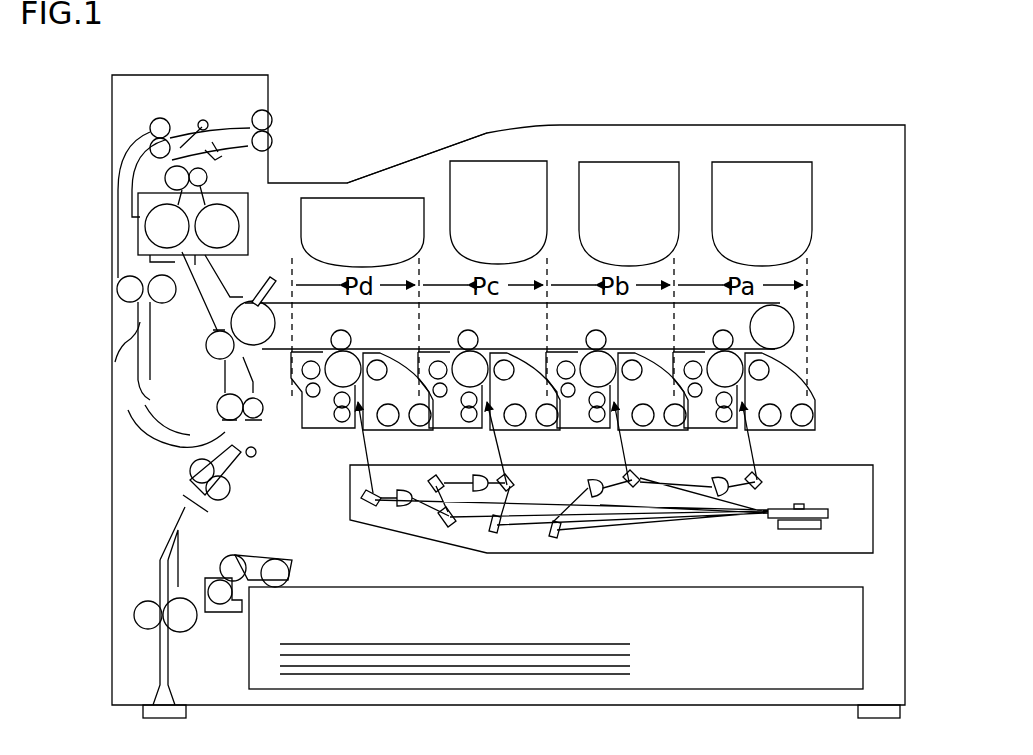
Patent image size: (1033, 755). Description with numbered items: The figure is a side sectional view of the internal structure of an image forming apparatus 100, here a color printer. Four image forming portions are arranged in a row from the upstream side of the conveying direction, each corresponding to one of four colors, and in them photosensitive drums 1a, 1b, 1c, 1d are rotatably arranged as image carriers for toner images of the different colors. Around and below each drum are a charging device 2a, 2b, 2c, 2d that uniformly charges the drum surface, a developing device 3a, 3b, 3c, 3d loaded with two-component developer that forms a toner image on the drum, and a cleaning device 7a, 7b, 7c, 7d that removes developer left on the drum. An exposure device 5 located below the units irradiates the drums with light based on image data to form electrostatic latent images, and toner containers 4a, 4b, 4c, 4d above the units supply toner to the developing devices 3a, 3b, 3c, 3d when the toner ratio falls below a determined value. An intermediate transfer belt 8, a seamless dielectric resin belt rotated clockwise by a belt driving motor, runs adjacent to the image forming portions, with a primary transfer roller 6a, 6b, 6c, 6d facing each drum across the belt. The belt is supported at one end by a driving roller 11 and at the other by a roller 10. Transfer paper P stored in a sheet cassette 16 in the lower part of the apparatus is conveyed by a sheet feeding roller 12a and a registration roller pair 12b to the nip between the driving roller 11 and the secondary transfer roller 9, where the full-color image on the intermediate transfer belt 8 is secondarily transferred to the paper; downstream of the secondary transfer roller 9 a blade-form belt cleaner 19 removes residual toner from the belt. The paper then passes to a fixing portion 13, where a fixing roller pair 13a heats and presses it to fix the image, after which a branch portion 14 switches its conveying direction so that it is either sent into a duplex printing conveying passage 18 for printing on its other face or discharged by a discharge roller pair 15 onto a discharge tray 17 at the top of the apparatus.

The image forming apparatus 100 is at (735, 91).
The photosensitive drum 1a is at (725, 369).
The photosensitive drum 1b is at (598, 369).
The photosensitive drum 1c is at (470, 369).
The photosensitive drum 1d is at (343, 369).
The charging device 2a is at (728, 432).
The charging device 2b is at (600, 432).
The charging device 2c is at (468, 432).
The charging device 2d is at (355, 445).
The developing device 3a is at (815, 400).
The developing device 3b is at (661, 358).
The developing device 3c is at (533, 358).
The developing device 3d is at (408, 358).
The toner container 4a is at (762, 214).
The toner container 4b is at (629, 214).
The toner container 4c is at (498, 212).
The toner container 4d is at (362, 232).
The exposure device 5 is at (873, 470).
The primary transfer roller 6a is at (715, 338).
The primary transfer roller 6b is at (588, 338).
The primary transfer roller 6c is at (460, 338).
The primary transfer roller 6d is at (333, 338).
The cleaning device 7a is at (680, 430).
The cleaning device 7b is at (560, 432).
The cleaning device 7c is at (420, 430).
The cleaning device 7d is at (305, 398).
The intermediate transfer belt 8 is at (760, 300).
The secondary transfer roller 9 is at (206, 352).
The tension roller 10 is at (780, 327).
The driving roller 11 is at (253, 312).
The sheet feeding roller 12a is at (282, 563).
The registration roller pair 12b is at (262, 455).
The fixing portion 13 is at (158, 226).
The fixing roller pair 13a is at (140, 252).
The branch portion 14 is at (140, 137).
The discharge roller pair 15 is at (270, 130).
The sheet cassette 16 is at (863, 632).
The discharge tray 17 is at (426, 150).
The duplex printing conveying passage 18 is at (115, 362).
The belt cleaner 19 is at (258, 255).
The transfer paper P is at (537, 642).